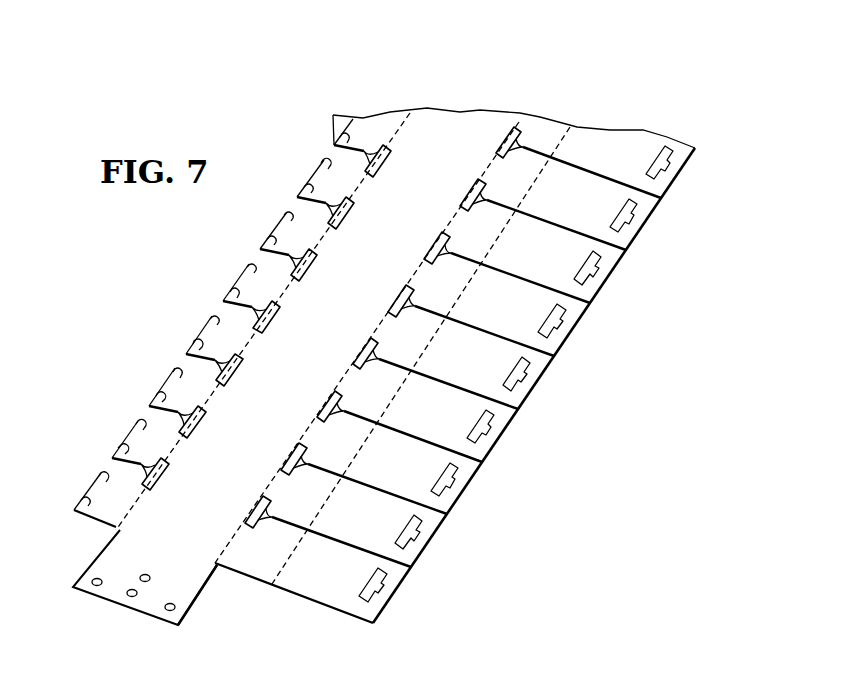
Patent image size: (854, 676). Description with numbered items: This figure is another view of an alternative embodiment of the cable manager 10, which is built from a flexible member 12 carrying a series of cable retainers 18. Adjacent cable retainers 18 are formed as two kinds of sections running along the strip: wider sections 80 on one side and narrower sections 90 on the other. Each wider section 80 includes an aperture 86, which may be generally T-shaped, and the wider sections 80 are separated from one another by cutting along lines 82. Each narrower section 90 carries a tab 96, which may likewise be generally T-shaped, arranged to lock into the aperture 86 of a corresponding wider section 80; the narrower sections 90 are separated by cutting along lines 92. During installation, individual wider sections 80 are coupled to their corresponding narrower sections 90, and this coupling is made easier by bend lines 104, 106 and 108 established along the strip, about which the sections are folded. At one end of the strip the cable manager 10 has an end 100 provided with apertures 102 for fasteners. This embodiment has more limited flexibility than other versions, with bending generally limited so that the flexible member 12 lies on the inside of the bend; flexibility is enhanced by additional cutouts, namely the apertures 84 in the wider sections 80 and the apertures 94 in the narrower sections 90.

The cable manager 10 is at (355, 53).
The flexible member 12 is at (457, 112).
The cable retainers 18 is at (316, 602).
The section 80 is at (589, 309).
The lines 82 is at (563, 292).
The apertures 84 is at (439, 256).
The aperture 86 is at (567, 323).
The section 90 is at (263, 255).
The lines 92 is at (267, 230).
The apertures 94 is at (298, 260).
The tab 96 is at (235, 266).
The end 100 is at (175, 623).
The apertures 102 is at (130, 598).
The bend line 104 is at (405, 110).
The bend line 106 is at (523, 122).
The bend line 108 is at (572, 127).